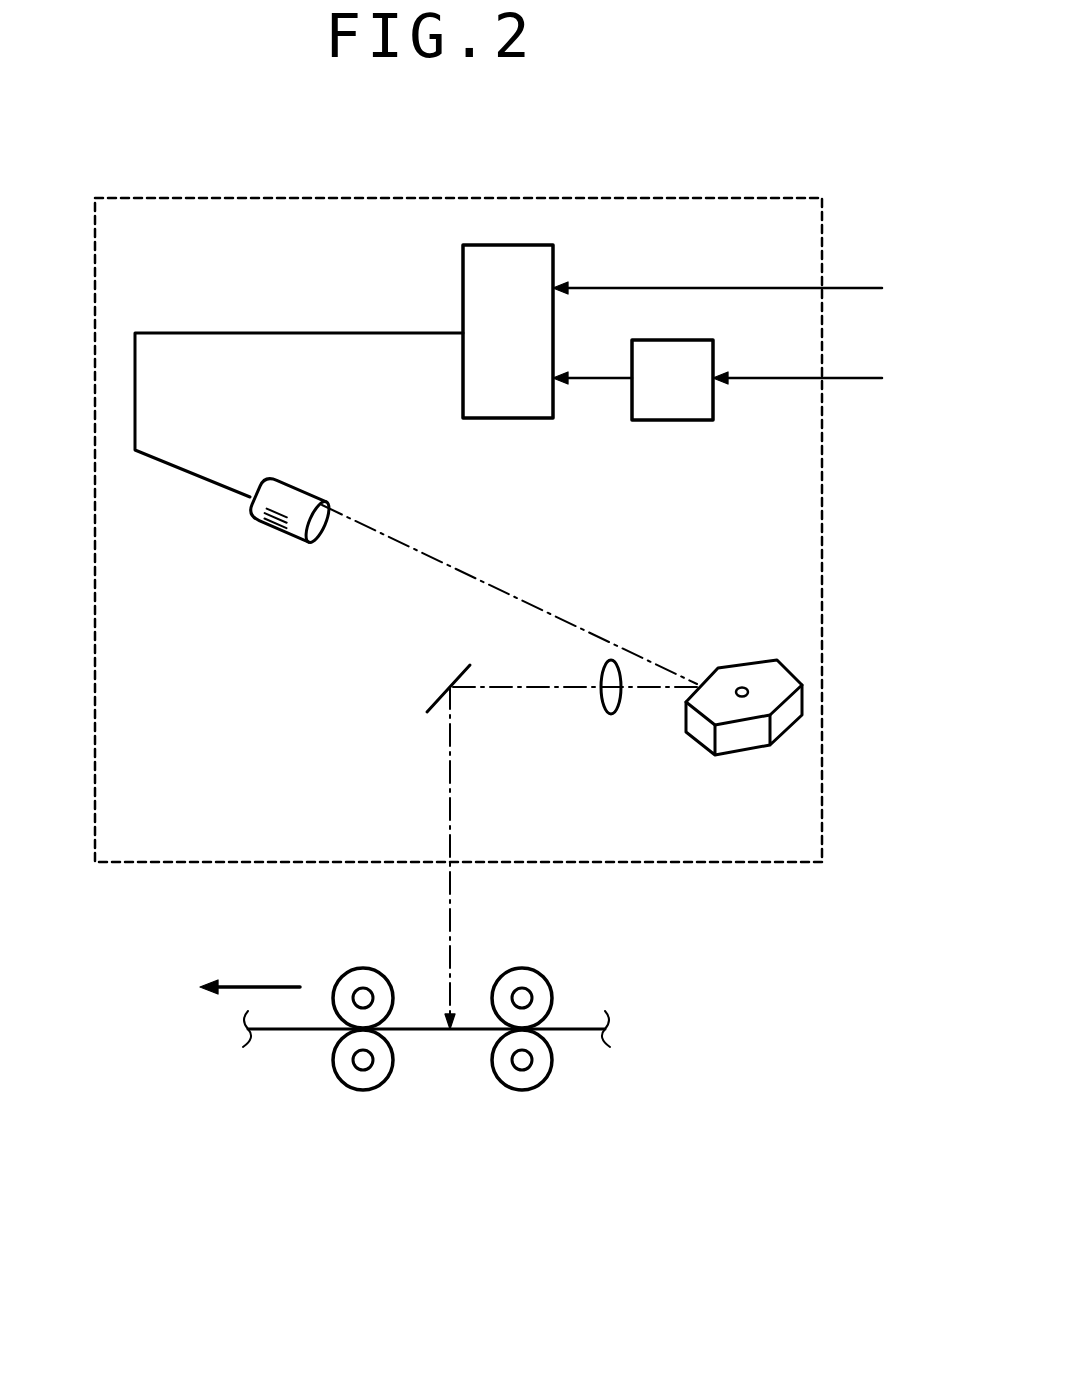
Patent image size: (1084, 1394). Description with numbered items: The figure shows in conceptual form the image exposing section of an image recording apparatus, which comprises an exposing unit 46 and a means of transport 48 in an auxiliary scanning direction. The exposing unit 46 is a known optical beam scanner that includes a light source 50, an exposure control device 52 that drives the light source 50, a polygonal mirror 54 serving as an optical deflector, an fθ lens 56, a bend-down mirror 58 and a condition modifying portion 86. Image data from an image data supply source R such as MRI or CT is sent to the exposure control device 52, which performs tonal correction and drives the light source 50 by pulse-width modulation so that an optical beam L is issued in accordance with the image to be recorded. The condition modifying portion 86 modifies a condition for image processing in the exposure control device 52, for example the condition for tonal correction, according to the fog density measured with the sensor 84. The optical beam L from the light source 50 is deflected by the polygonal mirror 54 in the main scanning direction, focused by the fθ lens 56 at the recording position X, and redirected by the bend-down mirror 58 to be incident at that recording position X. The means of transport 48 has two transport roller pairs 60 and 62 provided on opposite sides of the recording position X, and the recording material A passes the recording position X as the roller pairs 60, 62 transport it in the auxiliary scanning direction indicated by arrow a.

The exposing unit 46 is at (762, 862).
The means of transport in an auxiliary scanning direction 48 is at (360, 1146).
The light source 50 is at (305, 490).
The exposure control device 52 is at (483, 353).
The polygonal mirror 54 is at (753, 670).
The fθ lens 56 is at (626, 706).
The bend-down mirror 58 is at (452, 688).
The transport roller pair 60 is at (345, 1072).
The transport roller pair 62 is at (535, 1070).
The sensor 84 is at (828, 379).
The condition modifying portion 86 is at (697, 402).
The image data supply source R is at (739, 288).
The optical beam L is at (480, 585).
The arrow indicating auxiliary scanning direction a is at (258, 985).
The recording material A is at (421, 1032).
The recording position X is at (458, 1052).